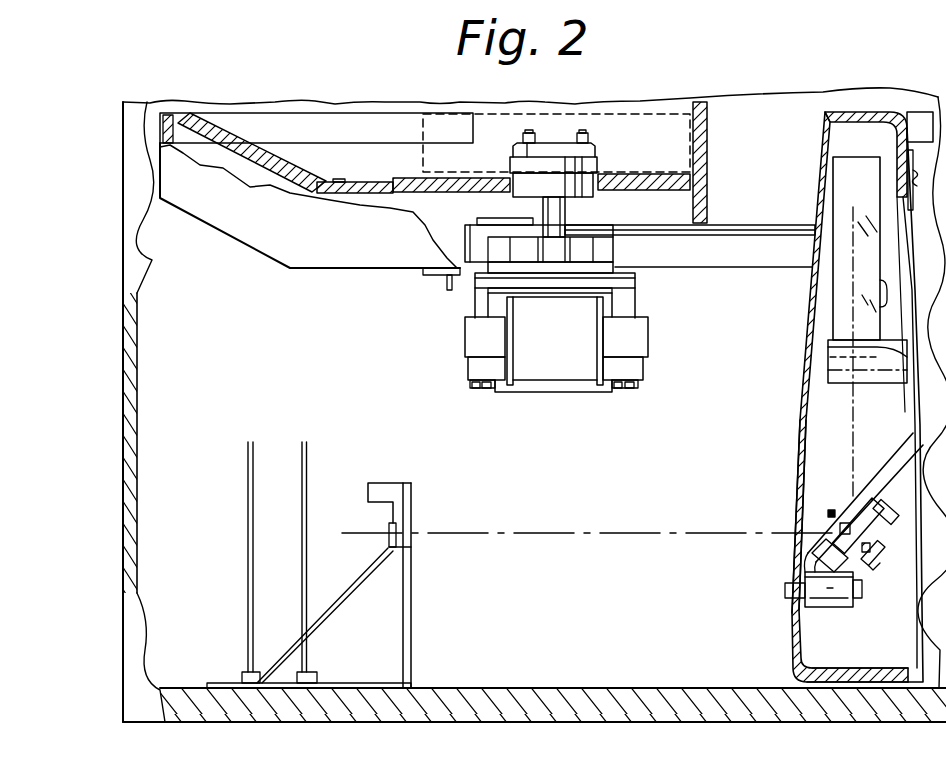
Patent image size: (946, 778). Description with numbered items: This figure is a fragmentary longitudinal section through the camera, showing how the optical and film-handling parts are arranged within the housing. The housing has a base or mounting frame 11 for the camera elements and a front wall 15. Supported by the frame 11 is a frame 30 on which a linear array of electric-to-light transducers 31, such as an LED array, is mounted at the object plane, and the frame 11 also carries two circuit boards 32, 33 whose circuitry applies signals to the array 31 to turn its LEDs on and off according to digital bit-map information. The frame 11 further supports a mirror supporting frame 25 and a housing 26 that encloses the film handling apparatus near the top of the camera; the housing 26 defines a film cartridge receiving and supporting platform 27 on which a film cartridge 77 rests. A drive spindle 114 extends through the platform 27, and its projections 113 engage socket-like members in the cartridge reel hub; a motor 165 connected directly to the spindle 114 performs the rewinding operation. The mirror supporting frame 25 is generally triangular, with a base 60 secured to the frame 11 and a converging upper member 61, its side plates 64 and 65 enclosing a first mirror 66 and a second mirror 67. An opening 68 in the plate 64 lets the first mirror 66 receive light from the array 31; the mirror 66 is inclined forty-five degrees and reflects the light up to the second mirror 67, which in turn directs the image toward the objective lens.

The mounting frame 11 is at (597, 722).
The front wall 15 is at (125, 398).
The mirror supporting frame 25 is at (791, 442).
The housing 26 is at (686, 210).
The film cartridge receiving and supporting platform 27 is at (492, 174).
The frame 30 is at (403, 633).
The linear array of electric-to-light transducers 31 is at (411, 533).
The circuit board 32 is at (248, 562).
The circuit board 33 is at (302, 560).
The base 60 is at (843, 667).
The upper member 61 is at (848, 137).
The side plate 64 is at (800, 482).
The side plate 65 is at (915, 432).
The first mirror 66 is at (850, 515).
The second mirror 67 is at (861, 196).
The opening 68 is at (792, 527).
The film cartridge 77 is at (416, 158).
The projections 113 is at (580, 134).
The drive spindle 114 is at (598, 159).
The motor 165 is at (562, 350).